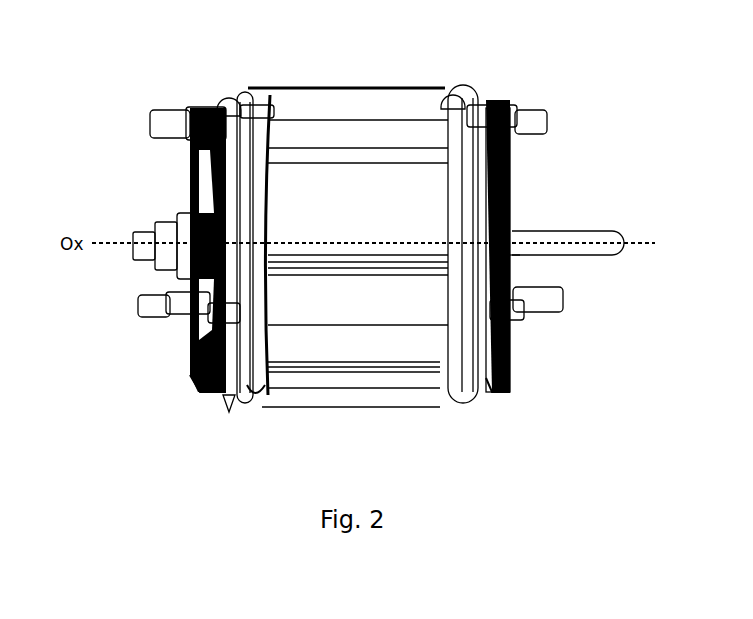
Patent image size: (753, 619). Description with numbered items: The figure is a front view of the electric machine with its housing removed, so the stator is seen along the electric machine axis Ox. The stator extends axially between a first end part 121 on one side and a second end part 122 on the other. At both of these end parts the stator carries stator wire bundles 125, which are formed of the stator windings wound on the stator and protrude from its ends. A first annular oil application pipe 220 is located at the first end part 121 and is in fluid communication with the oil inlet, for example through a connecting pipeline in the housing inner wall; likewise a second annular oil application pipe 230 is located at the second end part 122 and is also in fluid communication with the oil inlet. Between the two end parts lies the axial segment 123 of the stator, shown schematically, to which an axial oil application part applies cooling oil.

The first end part 121 is at (225, 127).
The second end part 122 is at (455, 128).
The axial segment 123 is at (440, 398).
The stator wire bundles 125 is at (222, 370).
The first annular oil application pipe 220 is at (250, 213).
The second annular oil application pipe 230 is at (470, 208).